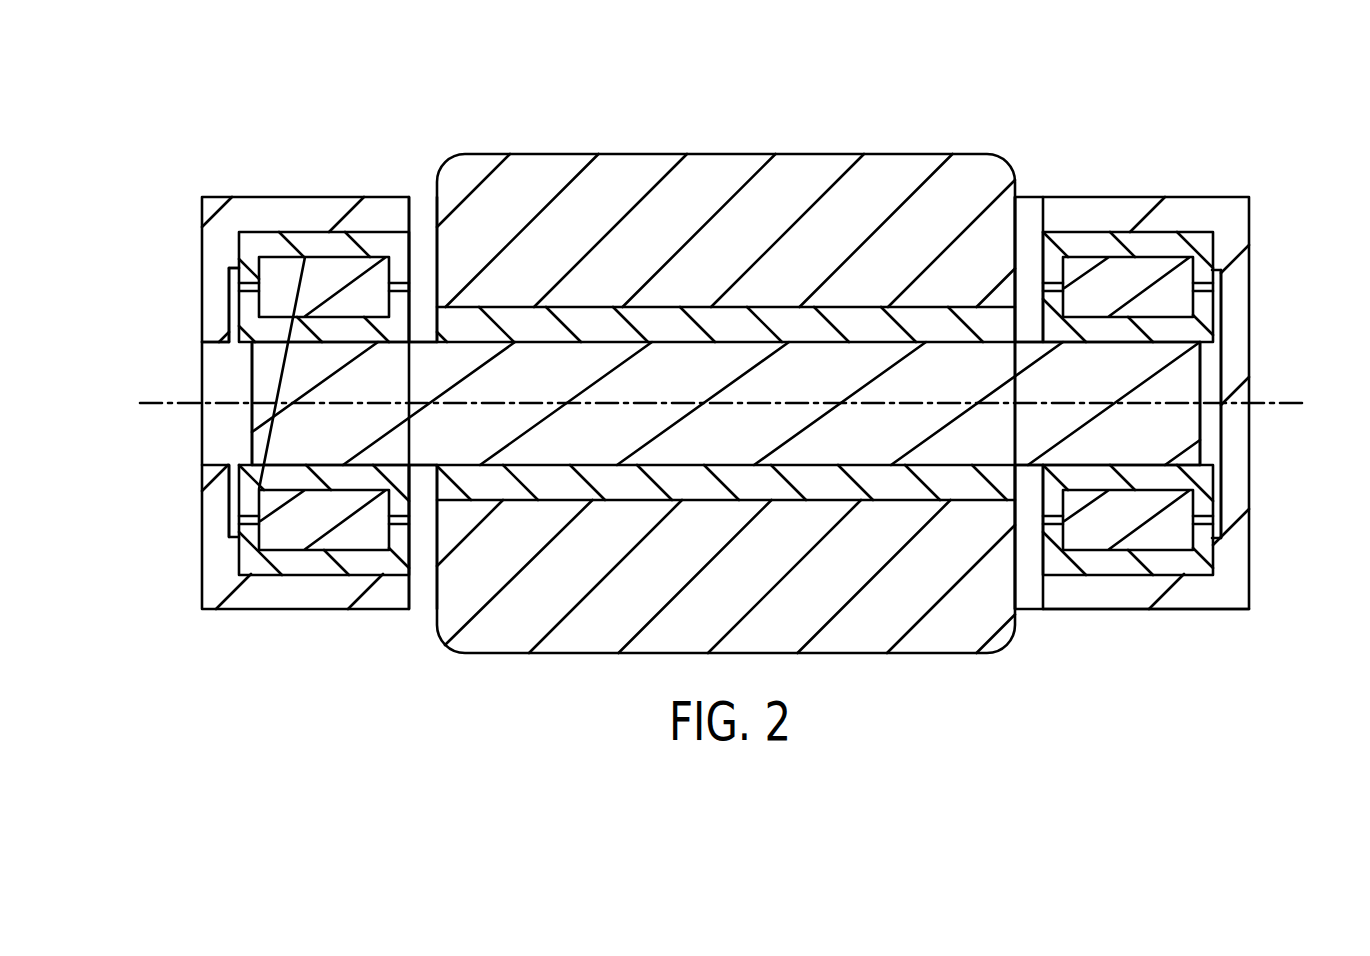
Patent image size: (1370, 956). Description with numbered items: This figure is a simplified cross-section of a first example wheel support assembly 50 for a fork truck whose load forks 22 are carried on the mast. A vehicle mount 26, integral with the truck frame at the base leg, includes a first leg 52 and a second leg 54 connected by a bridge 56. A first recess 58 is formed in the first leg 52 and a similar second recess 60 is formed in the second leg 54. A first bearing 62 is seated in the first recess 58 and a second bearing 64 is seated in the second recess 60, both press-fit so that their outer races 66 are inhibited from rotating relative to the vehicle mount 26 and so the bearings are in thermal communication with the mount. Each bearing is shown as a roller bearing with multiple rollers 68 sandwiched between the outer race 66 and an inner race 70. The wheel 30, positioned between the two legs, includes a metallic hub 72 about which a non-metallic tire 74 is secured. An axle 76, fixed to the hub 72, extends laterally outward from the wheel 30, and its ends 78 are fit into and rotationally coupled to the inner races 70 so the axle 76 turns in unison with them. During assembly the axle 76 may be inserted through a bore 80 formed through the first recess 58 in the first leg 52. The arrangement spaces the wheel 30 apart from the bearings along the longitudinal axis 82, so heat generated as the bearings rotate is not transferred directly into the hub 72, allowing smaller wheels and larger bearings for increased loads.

The load forks 22 is at (176, 126).
The vehicle mount 26 is at (1199, 612).
The wheel 30 is at (926, 656).
The wheel support assembly 50 is at (689, 84).
The first leg 52 is at (202, 300).
The second leg 54 is at (1249, 307).
The bridge 56 is at (423, 197).
The first recess 58 is at (240, 262).
The second recess 60 is at (1213, 242).
The first bearing 62 is at (325, 578).
The second bearing 64 is at (1131, 579).
The outer race 66 is at (262, 232).
The rollers 68 is at (726, 403).
The inner race 70 is at (232, 496).
The hub 72 is at (722, 403).
The tire 74 is at (818, 153).
The axle 76 is at (726, 403).
The ends 78 is at (726, 403).
The bore 80 is at (214, 342).
The longitudinal axis 82 is at (1281, 403).